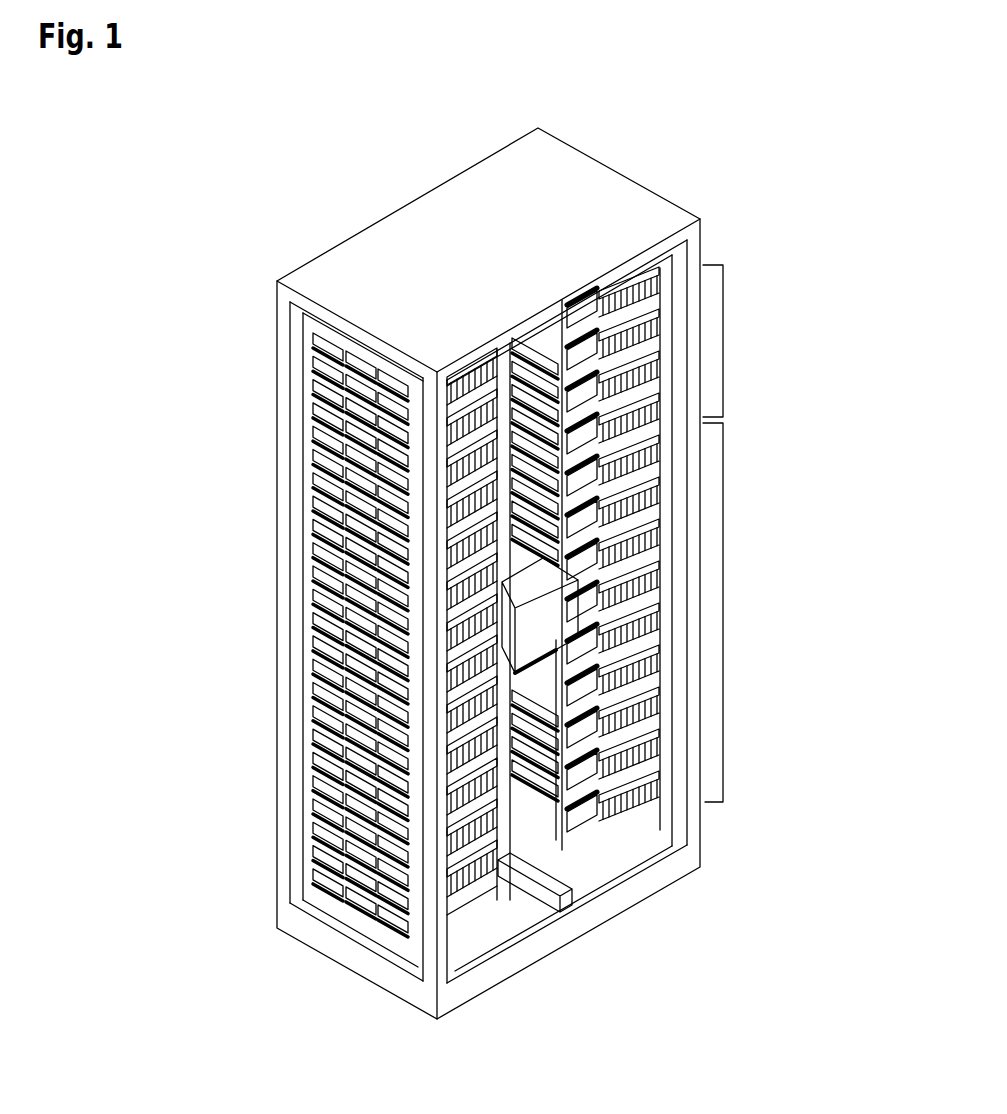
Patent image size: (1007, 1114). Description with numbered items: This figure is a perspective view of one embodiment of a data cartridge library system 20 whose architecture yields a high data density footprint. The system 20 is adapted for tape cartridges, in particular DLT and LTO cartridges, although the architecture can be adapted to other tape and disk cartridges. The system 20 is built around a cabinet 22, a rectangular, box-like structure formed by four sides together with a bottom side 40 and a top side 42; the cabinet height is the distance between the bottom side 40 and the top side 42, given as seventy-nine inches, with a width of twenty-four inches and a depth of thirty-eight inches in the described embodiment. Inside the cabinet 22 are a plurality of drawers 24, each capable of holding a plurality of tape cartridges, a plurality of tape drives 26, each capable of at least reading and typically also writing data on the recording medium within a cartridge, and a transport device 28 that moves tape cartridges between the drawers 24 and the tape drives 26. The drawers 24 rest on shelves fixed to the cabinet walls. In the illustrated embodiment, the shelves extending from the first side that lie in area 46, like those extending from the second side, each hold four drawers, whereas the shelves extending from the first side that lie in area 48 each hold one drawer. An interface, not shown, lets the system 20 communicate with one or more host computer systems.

The data cartridge library system 20 is at (751, 451).
The cabinet 22 is at (400, 183).
The drawers 24 is at (263, 672).
The tape drives 26 is at (540, 790).
The transport device 28 is at (553, 625).
The bottom side 40 is at (613, 868).
The top side 42 is at (413, 265).
The area 46 is at (723, 348).
The area 48 is at (723, 613).